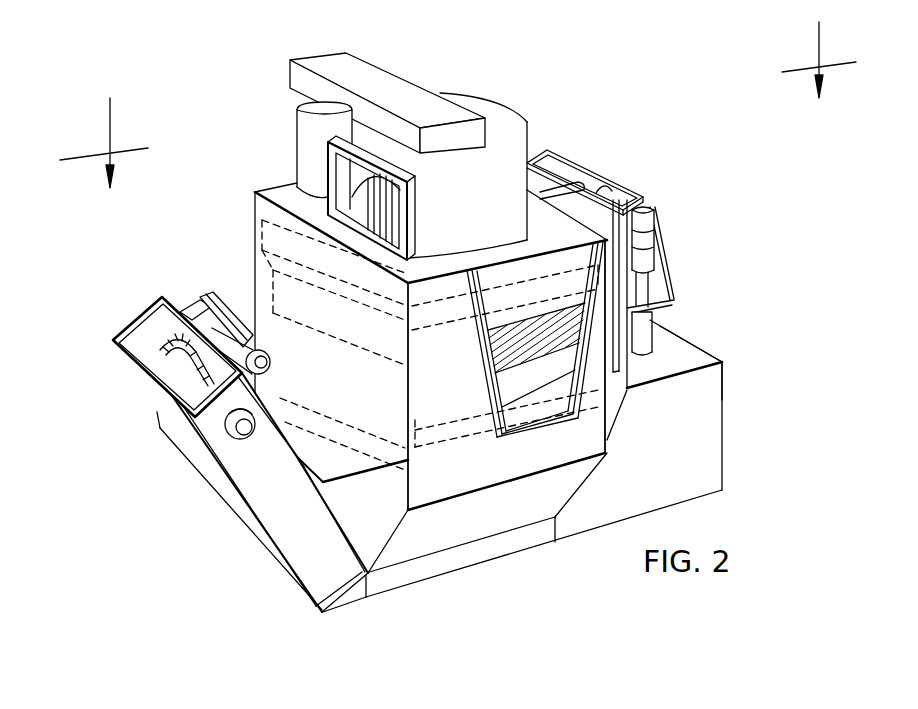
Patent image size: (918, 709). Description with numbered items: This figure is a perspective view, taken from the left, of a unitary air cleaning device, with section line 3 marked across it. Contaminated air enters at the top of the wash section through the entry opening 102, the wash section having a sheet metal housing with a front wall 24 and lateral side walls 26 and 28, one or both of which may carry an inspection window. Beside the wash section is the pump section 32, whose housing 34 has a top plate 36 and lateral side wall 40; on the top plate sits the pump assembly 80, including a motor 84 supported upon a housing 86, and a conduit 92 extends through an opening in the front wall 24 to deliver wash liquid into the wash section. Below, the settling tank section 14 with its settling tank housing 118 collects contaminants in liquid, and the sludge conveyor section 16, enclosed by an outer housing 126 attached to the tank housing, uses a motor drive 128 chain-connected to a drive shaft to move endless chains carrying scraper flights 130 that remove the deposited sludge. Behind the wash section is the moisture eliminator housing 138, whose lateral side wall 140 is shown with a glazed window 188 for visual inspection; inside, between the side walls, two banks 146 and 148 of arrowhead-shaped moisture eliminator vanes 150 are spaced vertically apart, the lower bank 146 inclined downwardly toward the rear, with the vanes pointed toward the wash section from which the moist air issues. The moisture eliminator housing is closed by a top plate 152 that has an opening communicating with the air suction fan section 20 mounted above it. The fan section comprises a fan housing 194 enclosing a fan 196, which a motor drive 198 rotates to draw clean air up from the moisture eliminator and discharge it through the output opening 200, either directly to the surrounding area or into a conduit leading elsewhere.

The section line 3- 3 is at (458, 94).
The settling tank section 14 is at (460, 554).
The sludge conveyor section 16 is at (146, 395).
The air suction fan section 20 is at (480, 92).
The front wall 24 is at (557, 170).
The lateral side wall 26 is at (652, 211).
The lateral side wall 28 is at (531, 165).
The pump section 32 is at (668, 284).
The housing 34 is at (694, 338).
The top plate 36 is at (721, 361).
The lateral side wall 40 is at (697, 412).
The pump assembly 80 is at (648, 250).
The motor 84 is at (652, 235).
The housing 86 is at (650, 320).
The conduit 92 is at (585, 187).
The entry opening 102 is at (622, 207).
The settling tank housing 118 is at (518, 512).
The outer housing 126 is at (203, 423).
The motor drive 128 is at (244, 353).
The scraper flights 130 is at (200, 357).
The moisture eliminator housing 138 is at (252, 242).
The lateral side wall 140 is at (414, 358).
The lower bank of moisture eliminator vanes 146 is at (258, 288).
The upper bank of moisture eliminator vanes 148 is at (262, 266).
The moisture eliminator vanes 150 is at (513, 345).
The top plate 152 is at (283, 196).
The glazed window 188 is at (538, 405).
The fan housing 194 is at (504, 110).
The fan 196 is at (388, 208).
The motor drive 198 is at (307, 110).
The output opening 200 is at (342, 168).